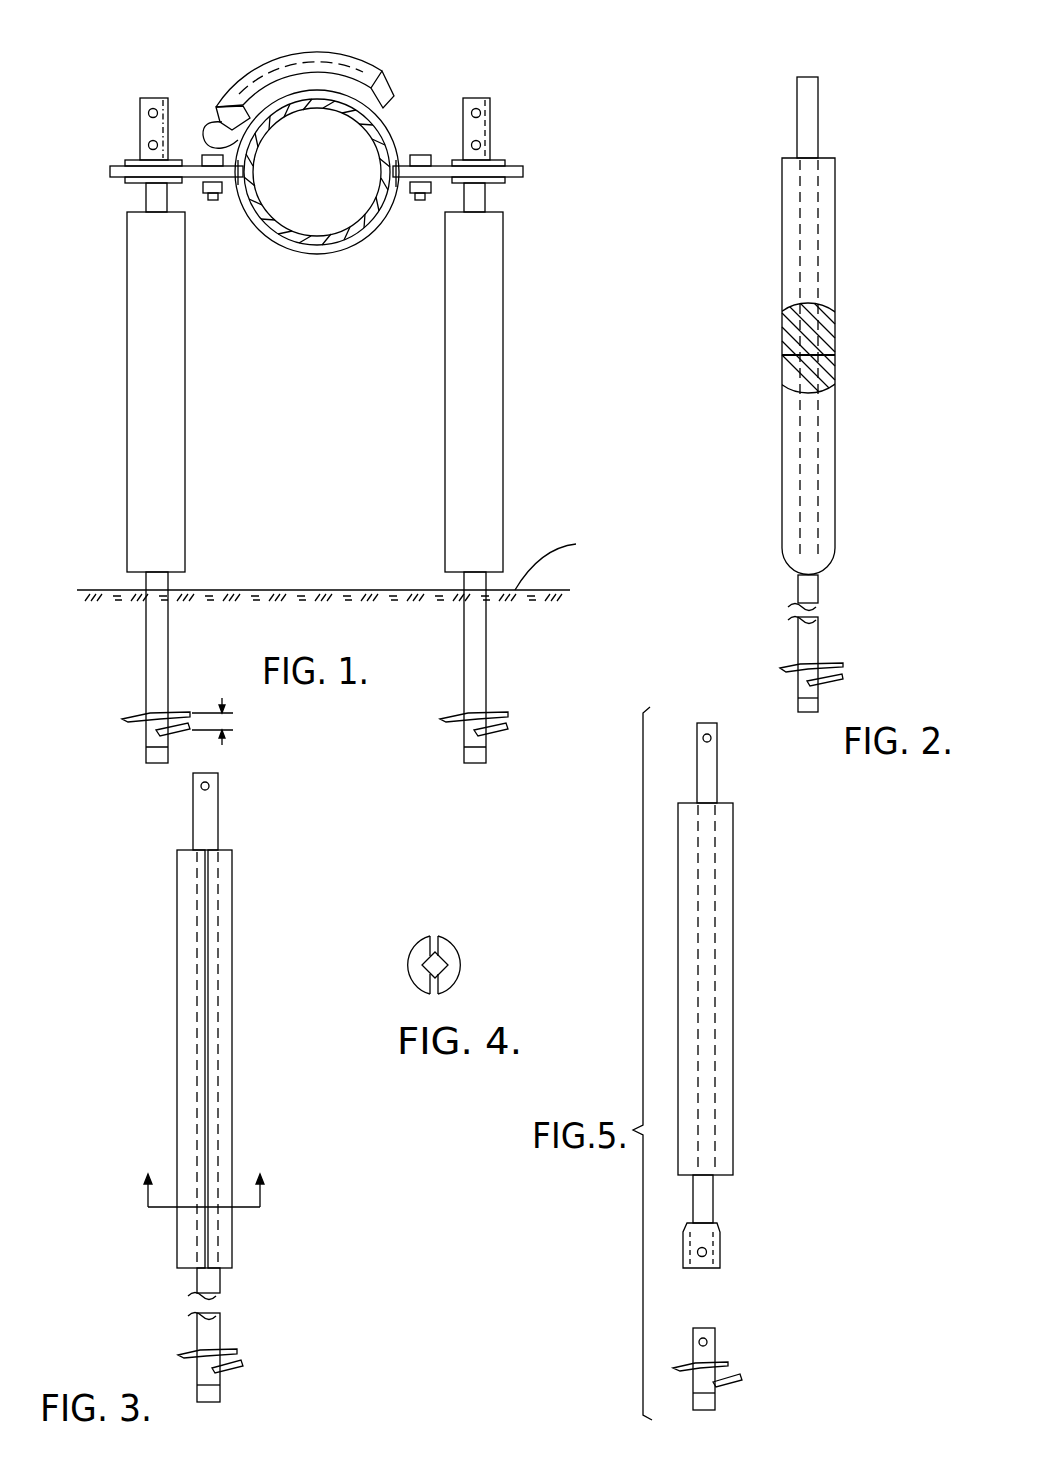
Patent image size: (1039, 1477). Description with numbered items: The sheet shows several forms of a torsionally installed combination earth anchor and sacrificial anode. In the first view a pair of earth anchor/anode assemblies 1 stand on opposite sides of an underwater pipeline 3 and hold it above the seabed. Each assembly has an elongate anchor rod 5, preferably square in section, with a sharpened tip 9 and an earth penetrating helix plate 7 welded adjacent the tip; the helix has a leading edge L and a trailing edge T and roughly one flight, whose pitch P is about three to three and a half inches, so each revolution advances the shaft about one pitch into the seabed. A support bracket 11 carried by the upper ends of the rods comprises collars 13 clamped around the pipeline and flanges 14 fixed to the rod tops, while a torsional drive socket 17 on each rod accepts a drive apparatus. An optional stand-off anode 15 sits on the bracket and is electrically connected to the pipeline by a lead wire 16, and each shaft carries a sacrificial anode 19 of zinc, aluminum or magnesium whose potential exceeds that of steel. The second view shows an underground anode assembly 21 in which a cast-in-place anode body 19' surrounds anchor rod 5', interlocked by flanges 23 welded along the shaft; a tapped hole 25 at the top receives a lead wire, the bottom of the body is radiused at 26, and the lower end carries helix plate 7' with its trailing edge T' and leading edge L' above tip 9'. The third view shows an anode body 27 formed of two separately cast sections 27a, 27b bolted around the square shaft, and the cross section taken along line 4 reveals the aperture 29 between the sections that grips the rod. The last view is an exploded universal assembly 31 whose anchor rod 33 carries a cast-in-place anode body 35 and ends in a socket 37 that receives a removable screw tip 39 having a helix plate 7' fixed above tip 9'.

In FIG. 1, the combination earth anchor/anode assembly 1 is at (533, 225).
In FIG. 1, the underwater pipeline 3 is at (315, 235).
In FIG. 1, the anchor rod 5 is at (343, 473).
In FIG. 1, the helix plate 7 is at (331, 742).
In FIG. 1, the tip 9 is at (321, 778).
In FIG. 1, the support bracket 11 is at (398, 122).
In FIG. 1, the collar 13 is at (370, 88).
In FIG. 1, the flange 14 is at (112, 172).
In FIG. 1, the stand-off anode 15 is at (303, 48).
In FIG. 1, the lead wire 16 is at (226, 108).
In FIG. 1, the torsional drive socket 17 is at (152, 96).
In FIG. 1, the sacrificial anode 19 is at (350, 392).
In FIG. 1, the trailing edge T is at (346, 692).
In FIG. 1, the leading edge L is at (341, 768).
In FIG. 1, the pitch P is at (226, 700).
In FIG. 2, the underground anode assembly 21 is at (815, 392).
In FIG. 2, the flanges or protrusions 23 is at (784, 345).
In FIG. 2, the tapped hole 25 is at (808, 77).
In FIG. 2, the radiused or tapered bottom end 26 is at (792, 577).
In FIG. 2, the anode body 19' is at (844, 366).
In FIG. 2, the anchor rod 5' is at (845, 640).
In FIG. 2, the helix plate 7' is at (832, 655).
In FIG. 5, the helix plate 7' is at (738, 1382).
In FIG. 2, the tip 9' is at (796, 727).
In FIG. 5, the tip 9' is at (719, 1414).
In FIG. 2, the trailing edge T' is at (875, 665).
In FIG. 5, the trailing edge T' is at (750, 1332).
In FIG. 2, the leading edge L' is at (845, 703).
In FIG. 5, the leading edge L' is at (753, 1404).
In FIG. 3, the anode body 27 is at (198, 1059).
In FIG. 4, the anode body 27 is at (437, 941).
In FIG. 3, the anode section 27a is at (220, 1065).
In FIG. 4, the anode section 27a is at (450, 976).
In FIG. 3, the anode section 27b is at (192, 1002).
In FIG. 4, the anode section 27b is at (415, 982).
In FIG. 4, the aperture 29 is at (440, 952).
In FIG. 3, the section line 4- 4 is at (202, 1172).
In FIG. 5, the universal earth anchor/anode assembly 31 is at (754, 1079).
In FIG. 5, the anchor rod 33 is at (718, 785).
In FIG. 5, the anode body 35 is at (740, 1028).
In FIG. 5, the socket 37 is at (722, 1245).
In FIG. 5, the screw tip 39 is at (750, 1369).